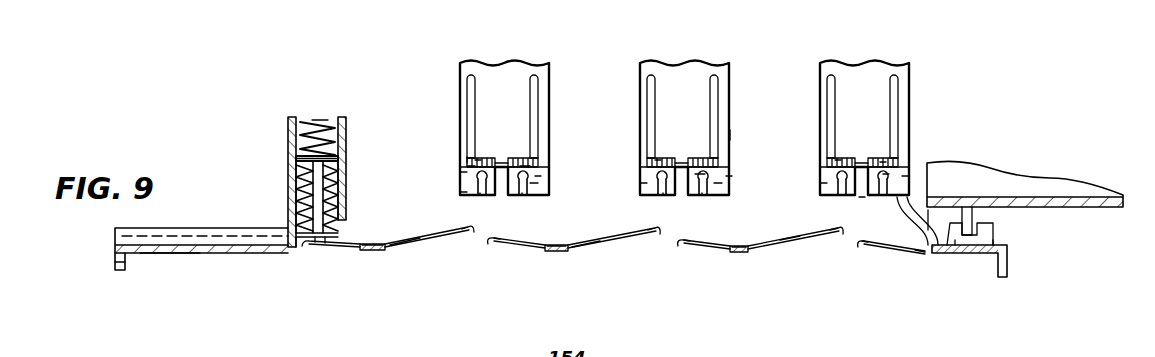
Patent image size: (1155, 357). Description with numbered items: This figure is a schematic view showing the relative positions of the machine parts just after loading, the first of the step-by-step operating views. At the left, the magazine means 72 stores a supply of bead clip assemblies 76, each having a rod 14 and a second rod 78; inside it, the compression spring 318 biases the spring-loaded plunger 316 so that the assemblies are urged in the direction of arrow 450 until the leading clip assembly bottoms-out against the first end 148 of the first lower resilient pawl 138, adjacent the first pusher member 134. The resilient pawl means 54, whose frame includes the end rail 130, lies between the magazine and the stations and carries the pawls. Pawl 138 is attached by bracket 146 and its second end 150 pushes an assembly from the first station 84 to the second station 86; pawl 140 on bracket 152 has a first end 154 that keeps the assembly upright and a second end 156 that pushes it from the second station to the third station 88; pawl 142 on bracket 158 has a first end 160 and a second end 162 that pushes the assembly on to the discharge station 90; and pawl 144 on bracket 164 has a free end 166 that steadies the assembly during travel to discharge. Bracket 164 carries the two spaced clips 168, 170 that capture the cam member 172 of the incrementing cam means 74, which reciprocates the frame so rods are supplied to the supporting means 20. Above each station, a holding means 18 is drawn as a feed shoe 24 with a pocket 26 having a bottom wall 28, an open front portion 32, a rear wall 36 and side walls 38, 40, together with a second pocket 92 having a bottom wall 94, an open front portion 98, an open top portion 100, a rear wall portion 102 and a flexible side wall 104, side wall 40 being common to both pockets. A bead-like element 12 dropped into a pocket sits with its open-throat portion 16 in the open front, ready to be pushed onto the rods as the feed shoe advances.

The open-throated element 12 is at (534, 183).
The rod 14 is at (300, 250).
The open-throat portion 16 is at (480, 193).
The holding means 18 is at (436, 185).
The supporting means 20 is at (424, 262).
The feed shoe 24 is at (460, 184).
The pocket 26 is at (481, 158).
The bottom wall 28 is at (467, 166).
The open front portion 32 is at (466, 194).
The rear wall 36 is at (467, 157).
The side wall 38 is at (466, 172).
The side wall 40 is at (502, 182).
The resilient pawl means 54 is at (153, 262).
The magazine means 72 is at (350, 134).
The incrementing cam means 74 is at (1076, 190).
The bead clip assembly 76 is at (288, 205).
The second rod 78 is at (329, 246).
The first station 84 is at (515, 258).
The second station 86 is at (663, 252).
The third station 88 is at (840, 270).
The discharge station 90 is at (1095, 221).
The second pocket 92 is at (524, 168).
The bottom wall 94 is at (928, 208).
The open front portion 98 is at (910, 240).
The open top portion 100 is at (885, 175).
The rear wall portion 102 is at (882, 163).
The flexible side wall 104 is at (538, 178).
The end rail 130 is at (113, 262).
The first pusher member 134 is at (172, 227).
The first lower resilient pawl 138 is at (406, 250).
The second lower resilient pawl 140 is at (578, 250).
The third lower resilient pawl 142 is at (795, 240).
The fourth lower resilient pawl 144 is at (925, 258).
The bracket 146 is at (402, 243).
The first end 148 is at (322, 243).
The second end 150 is at (472, 236).
The bracket 152 is at (565, 225).
The first end 154 is at (502, 247).
The second end 156 is at (647, 230).
The bracket 158 is at (747, 252).
The first end 160 is at (682, 243).
The second end 162 is at (815, 223).
The bracket 164 is at (990, 252).
The free end 166 is at (862, 247).
The clip 168 is at (960, 247).
The clip 170 is at (1000, 235).
The cam member 172 is at (974, 217).
The spring-loaded plunger 316 is at (300, 150).
The compression spring 318 is at (322, 128).
The arrow 450 is at (316, 112).